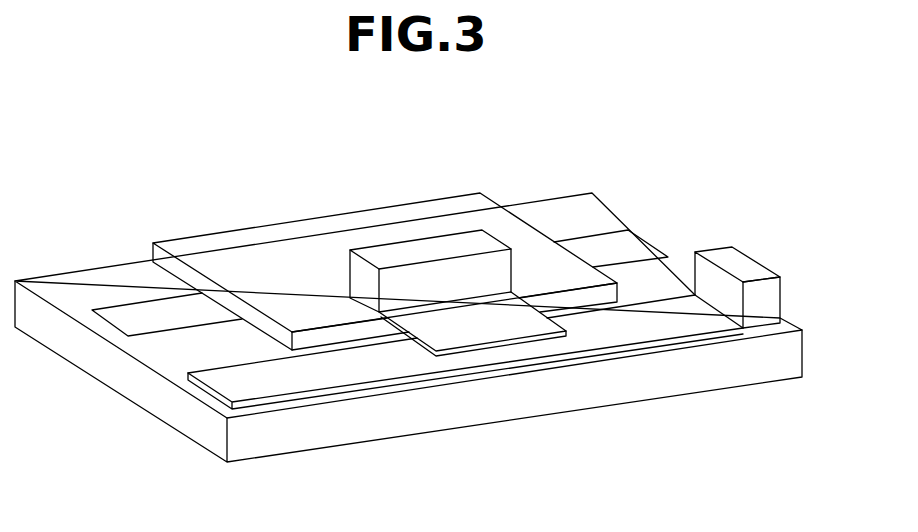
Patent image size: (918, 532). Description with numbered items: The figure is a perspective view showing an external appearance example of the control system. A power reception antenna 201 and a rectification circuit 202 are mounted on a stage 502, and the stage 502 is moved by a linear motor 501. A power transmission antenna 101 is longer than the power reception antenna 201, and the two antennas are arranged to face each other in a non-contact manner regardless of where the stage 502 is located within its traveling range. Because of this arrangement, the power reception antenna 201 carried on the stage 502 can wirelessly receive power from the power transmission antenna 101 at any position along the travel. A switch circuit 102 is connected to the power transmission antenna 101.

The power transmission antenna 101 is at (610, 330).
The switch circuit 102 is at (770, 296).
The power reception antenna 201 is at (487, 323).
The rectification circuit 202 is at (423, 250).
The linear motor 501 is at (132, 317).
The stage 502 is at (252, 258).